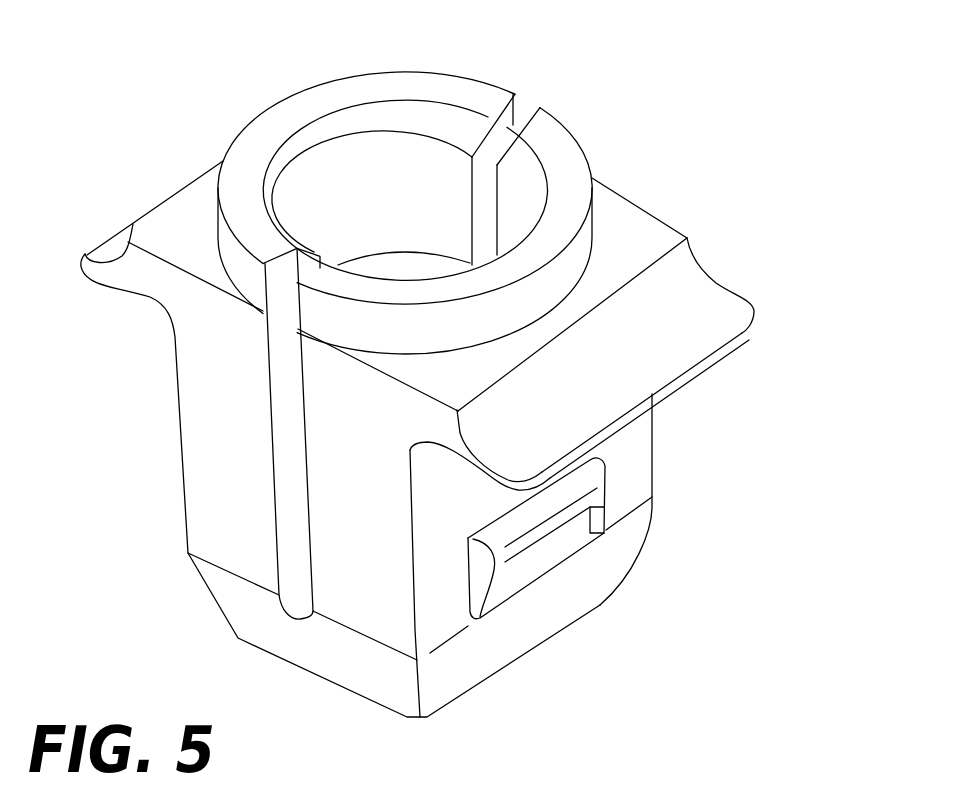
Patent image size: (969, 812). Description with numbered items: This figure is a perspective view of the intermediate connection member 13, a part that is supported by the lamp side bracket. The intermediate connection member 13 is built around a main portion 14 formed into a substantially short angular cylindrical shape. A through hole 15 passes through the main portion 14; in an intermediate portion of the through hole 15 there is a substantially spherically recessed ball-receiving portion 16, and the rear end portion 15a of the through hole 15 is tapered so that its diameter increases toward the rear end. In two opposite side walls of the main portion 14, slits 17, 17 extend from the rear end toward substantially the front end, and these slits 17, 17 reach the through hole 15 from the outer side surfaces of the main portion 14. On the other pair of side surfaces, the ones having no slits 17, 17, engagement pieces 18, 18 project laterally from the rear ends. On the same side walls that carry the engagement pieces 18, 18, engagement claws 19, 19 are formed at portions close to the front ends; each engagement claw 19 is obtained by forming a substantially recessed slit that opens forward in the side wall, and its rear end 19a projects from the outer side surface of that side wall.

The intermediate connection member 13 is at (688, 188).
The main portion 14 is at (181, 462).
The through hole 15 is at (427, 127).
The rear end portion 15a is at (310, 143).
The ball-receiving portion 16 is at (410, 268).
The slit 17 is at (492, 145).
The engagement piece 18 is at (115, 250).
The engagement claw 19 is at (565, 518).
The rear end 19a is at (520, 543).